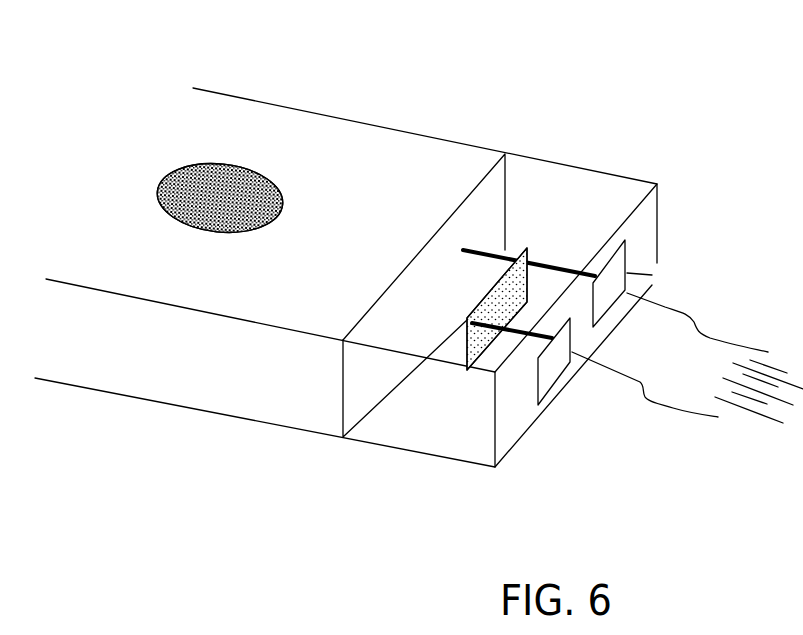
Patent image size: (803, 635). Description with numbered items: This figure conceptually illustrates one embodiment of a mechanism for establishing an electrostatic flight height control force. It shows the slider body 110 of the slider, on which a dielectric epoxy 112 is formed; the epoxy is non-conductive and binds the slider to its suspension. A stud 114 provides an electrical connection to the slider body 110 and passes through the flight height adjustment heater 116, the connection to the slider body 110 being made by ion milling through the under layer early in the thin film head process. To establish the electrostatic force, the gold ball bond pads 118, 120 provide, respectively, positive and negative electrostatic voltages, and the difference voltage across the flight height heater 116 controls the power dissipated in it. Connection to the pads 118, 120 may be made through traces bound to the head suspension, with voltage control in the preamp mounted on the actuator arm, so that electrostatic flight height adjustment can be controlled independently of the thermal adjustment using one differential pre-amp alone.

The slider body 110 is at (313, 409).
The dielectric epoxy 112 is at (263, 161).
The stud 114 is at (500, 240).
The flight height adjustment heater 116 is at (458, 341).
The gold ball bond pad 118 is at (612, 299).
The gold ball bond pad 120 is at (557, 384).